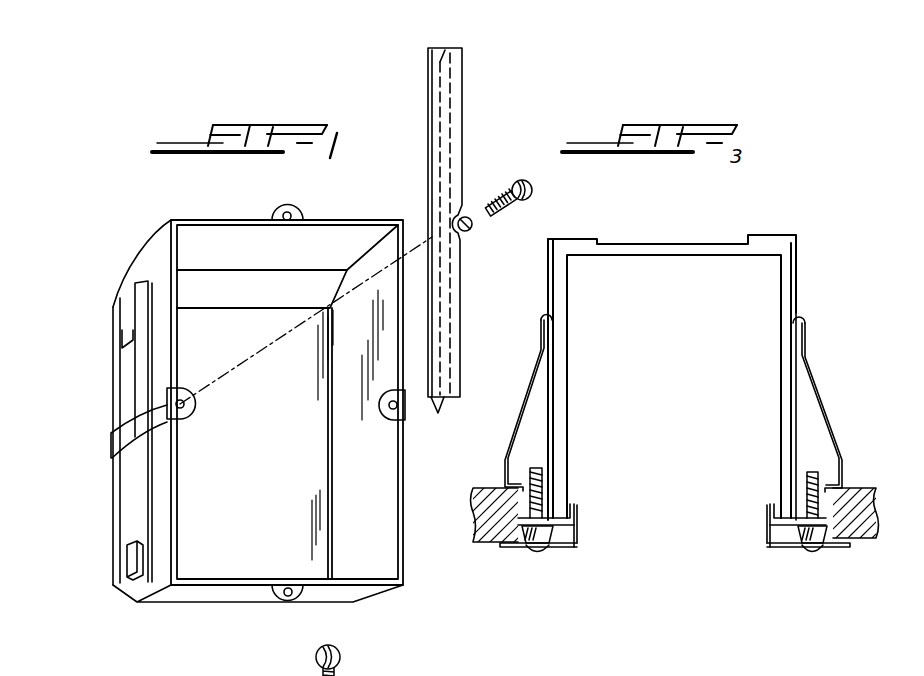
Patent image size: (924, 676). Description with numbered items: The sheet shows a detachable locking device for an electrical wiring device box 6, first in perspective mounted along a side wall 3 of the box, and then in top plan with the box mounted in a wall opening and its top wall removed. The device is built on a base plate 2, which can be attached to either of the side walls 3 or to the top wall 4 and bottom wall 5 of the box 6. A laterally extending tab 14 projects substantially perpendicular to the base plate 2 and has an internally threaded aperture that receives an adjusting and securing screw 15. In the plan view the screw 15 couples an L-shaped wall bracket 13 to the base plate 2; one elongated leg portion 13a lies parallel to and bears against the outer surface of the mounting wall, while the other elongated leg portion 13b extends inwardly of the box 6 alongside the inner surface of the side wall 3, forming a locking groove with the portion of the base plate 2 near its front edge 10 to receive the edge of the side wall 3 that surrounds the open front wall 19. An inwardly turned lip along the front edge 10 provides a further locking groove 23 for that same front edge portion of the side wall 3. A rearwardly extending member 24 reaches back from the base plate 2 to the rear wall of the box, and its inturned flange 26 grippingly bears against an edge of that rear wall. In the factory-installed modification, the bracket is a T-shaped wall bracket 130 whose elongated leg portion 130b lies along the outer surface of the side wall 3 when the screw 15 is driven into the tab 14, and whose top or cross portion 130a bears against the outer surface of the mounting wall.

In FIG. 3, the base plate 2 is at (556, 345).
In FIG. 1, the side wall 3 is at (380, 553).
In FIG. 3, the side wall 3 is at (560, 390).
In FIG. 1, the top wall 4 is at (226, 237).
In FIG. 1, the bottom wall 5 is at (317, 602).
In FIG. 1, the electrical wiring device box 6 is at (400, 569).
In FIG. 3, the front edge 10 is at (553, 530).
In FIG. 3, the wall bracket 13 is at (503, 543).
In FIG. 3, the elongated leg portion 13a is at (520, 547).
In FIG. 3, the elongated leg portion 13b is at (575, 532).
In FIG. 1, the tab 14 is at (110, 443).
In FIG. 3, the tab 14 is at (523, 517).
In FIG. 1, the adjusting and securing screw 15 is at (516, 180).
In FIG. 3, the adjusting and securing screw 15 is at (538, 482).
In FIG. 1, the open front wall 19 is at (353, 513).
In FIG. 3, the locking groove 23 is at (570, 517).
In FIG. 3, the rearwardly extending member 24 is at (552, 278).
In FIG. 3, the inturned flange 26 is at (577, 240).
In FIG. 1, the wall bracket 130 is at (428, 86).
In FIG. 1, the top or cross portion 130a is at (437, 50).
In FIG. 1, the elongated leg portion 130b is at (447, 415).